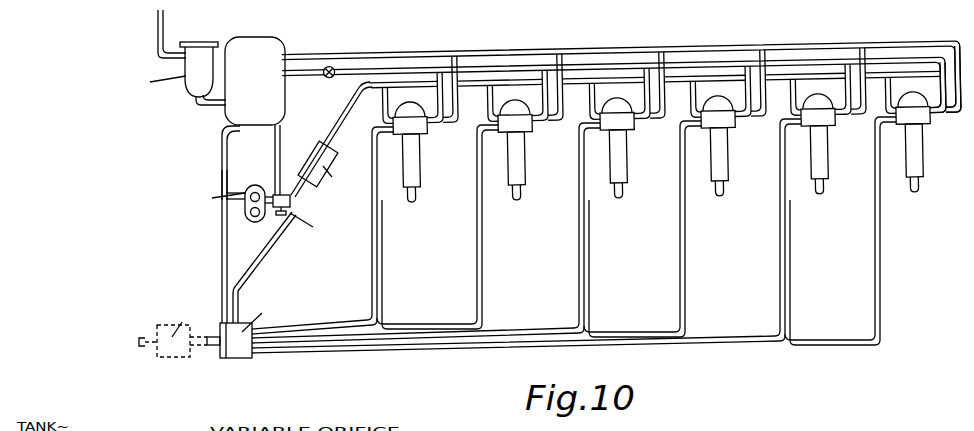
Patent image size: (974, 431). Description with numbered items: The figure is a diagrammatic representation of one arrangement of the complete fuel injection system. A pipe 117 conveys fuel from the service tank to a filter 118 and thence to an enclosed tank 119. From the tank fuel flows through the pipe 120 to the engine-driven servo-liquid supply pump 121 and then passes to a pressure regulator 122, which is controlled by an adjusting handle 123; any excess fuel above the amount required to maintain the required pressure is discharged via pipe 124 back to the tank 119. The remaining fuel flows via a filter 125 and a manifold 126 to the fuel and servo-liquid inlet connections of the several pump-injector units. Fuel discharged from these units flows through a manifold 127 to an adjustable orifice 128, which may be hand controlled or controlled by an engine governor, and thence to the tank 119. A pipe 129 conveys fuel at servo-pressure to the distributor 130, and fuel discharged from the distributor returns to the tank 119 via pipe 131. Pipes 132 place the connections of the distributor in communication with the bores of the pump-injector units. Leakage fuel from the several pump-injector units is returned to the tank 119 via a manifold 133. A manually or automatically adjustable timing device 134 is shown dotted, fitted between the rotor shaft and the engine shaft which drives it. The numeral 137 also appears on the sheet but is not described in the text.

The pipe 117 is at (164, 29).
The filter 118 is at (192, 72).
The enclosed tank 119 is at (255, 81).
The pipe 120 is at (222, 130).
The servo-liquid supply pump 121 is at (247, 208).
The pressure regulator 122 is at (283, 193).
The adjusting handle 123 is at (287, 213).
The pipe 124 is at (282, 133).
The filter 125 is at (334, 173).
The manifold 126 is at (412, 82).
The manifold 127 is at (372, 68).
The adjustable orifice 128 is at (331, 76).
The pipe 129 is at (221, 287).
The distributor 130 is at (235, 358).
The pipe 131 is at (222, 180).
The pipes 132 is at (315, 350).
The manifold 133 is at (473, 53).
The timing device 134 is at (182, 350).
The tank (adjacent figure) 137 is at (158, 430).